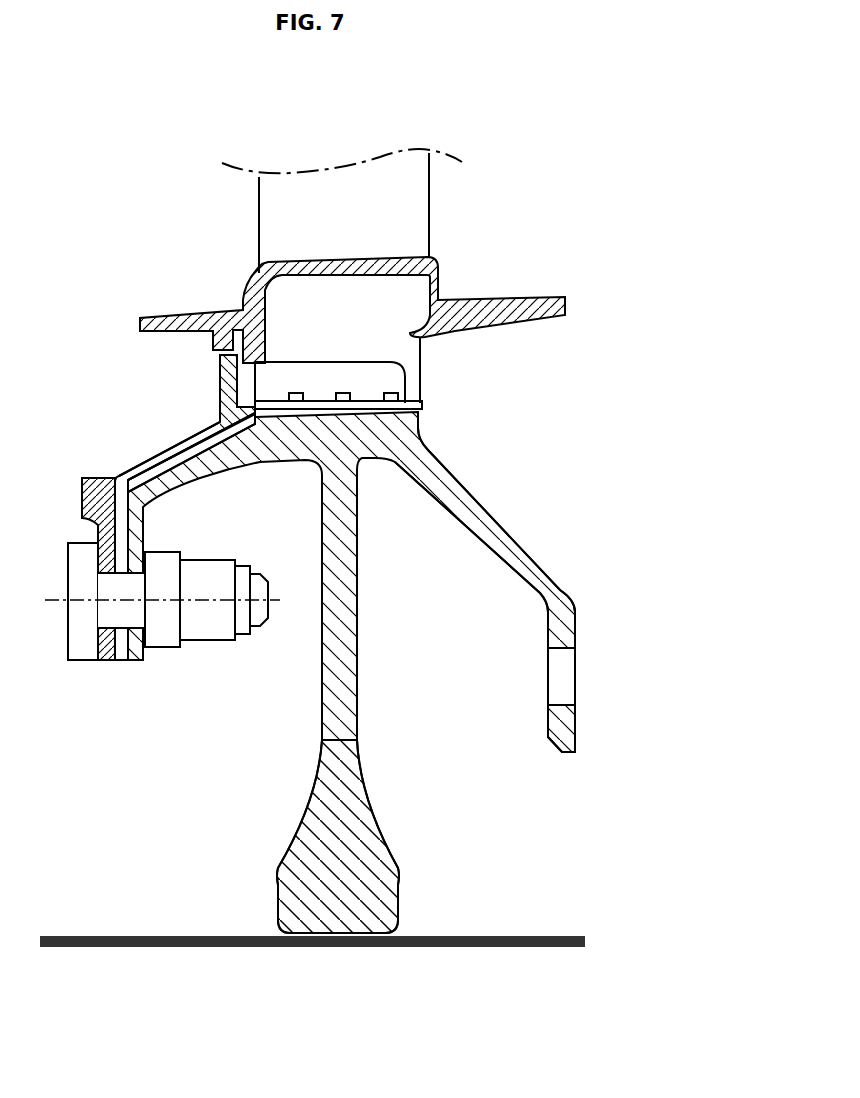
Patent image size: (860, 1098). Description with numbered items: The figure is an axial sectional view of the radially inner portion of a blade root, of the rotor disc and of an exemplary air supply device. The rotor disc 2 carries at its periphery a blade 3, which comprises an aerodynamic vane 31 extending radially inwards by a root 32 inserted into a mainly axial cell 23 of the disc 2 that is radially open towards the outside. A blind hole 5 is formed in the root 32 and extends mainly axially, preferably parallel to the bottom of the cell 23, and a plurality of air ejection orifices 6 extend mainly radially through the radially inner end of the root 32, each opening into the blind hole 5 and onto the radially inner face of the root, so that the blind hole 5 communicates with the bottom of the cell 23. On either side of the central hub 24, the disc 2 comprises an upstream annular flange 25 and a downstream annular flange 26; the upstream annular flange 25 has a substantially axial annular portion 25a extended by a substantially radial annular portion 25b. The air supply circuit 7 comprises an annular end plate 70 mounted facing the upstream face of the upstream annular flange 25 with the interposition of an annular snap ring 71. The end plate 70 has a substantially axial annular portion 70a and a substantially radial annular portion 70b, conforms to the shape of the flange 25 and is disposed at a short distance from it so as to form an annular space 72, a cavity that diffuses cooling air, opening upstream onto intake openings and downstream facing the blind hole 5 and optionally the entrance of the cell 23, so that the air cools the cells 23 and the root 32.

The rotor disc 2 is at (351, 672).
The blade 3 is at (474, 220).
The blind hole 5 is at (331, 391).
The air ejection orifice 6 is at (343, 410).
The air supply circuit 7 is at (66, 446).
The cell 23 is at (421, 404).
The central hub 24 is at (326, 886).
The upstream annular flange 25 is at (171, 568).
The substantially axial annular portion 25a is at (197, 477).
The substantially radial annular portion 25b is at (140, 542).
The downstream annular flange 26 is at (490, 522).
The aerodynamic vane 31 is at (349, 223).
The root 32 is at (349, 327).
The annular end plate 70 is at (175, 449).
The substantially axial annular portion 70a is at (145, 472).
The substantially radial annular portion 70b is at (102, 553).
The annular snap ring 71 is at (240, 326).
The annular space 72 is at (172, 466).